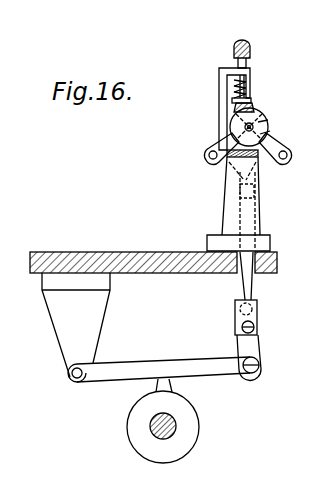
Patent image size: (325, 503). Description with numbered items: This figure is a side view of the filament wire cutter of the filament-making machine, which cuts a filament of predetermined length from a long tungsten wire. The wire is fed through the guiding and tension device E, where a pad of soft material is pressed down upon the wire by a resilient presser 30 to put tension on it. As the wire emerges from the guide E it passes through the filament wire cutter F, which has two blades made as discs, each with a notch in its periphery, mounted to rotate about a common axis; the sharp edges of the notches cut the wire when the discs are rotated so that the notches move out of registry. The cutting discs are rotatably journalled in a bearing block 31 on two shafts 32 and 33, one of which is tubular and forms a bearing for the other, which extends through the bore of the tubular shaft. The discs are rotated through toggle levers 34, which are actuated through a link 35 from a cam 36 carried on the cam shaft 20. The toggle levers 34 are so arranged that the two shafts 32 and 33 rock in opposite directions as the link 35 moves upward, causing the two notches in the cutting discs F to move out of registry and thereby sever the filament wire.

The cam shaft 20 is at (150, 423).
The resilient presser 30 is at (247, 88).
The bearing block 31 is at (226, 197).
The shaft 32 is at (233, 119).
The shaft 33 is at (272, 130).
The toggle levers 34 is at (211, 151).
The link 35 is at (253, 290).
The cam 36 is at (192, 420).
The guiding and tension device E is at (254, 108).
The filament wire cutter F is at (270, 118).